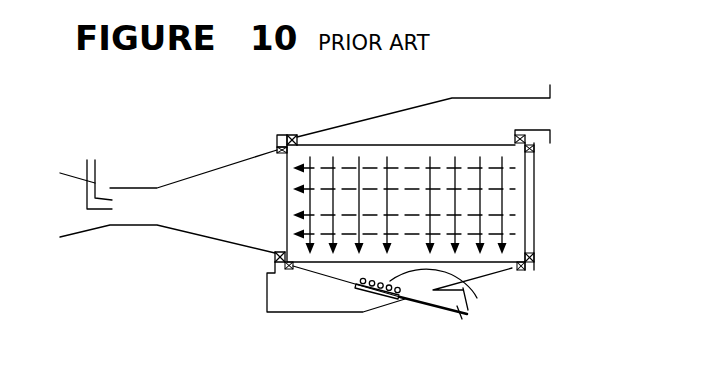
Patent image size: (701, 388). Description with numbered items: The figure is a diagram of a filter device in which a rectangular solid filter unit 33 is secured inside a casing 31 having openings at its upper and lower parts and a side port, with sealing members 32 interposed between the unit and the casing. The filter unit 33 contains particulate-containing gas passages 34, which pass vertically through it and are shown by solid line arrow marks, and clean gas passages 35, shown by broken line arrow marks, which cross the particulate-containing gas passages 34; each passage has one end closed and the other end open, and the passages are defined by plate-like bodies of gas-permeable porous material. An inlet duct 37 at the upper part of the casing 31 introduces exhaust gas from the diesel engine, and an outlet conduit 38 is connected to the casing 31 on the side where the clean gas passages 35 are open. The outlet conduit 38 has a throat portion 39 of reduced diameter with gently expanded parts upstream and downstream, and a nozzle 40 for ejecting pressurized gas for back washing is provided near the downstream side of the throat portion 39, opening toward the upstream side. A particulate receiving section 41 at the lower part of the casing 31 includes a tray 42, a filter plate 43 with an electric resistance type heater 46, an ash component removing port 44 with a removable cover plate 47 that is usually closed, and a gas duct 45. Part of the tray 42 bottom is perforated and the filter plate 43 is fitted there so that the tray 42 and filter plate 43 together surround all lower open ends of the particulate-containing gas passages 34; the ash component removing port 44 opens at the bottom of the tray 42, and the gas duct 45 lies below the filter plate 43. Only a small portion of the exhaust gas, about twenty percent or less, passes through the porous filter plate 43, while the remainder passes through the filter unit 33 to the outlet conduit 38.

The casing 31 is at (535, 223).
The sealing members 32 is at (535, 252).
The filter unit 33 is at (517, 187).
The particulate-containing gas passages 34 is at (503, 180).
The clean gas passages 35 is at (325, 235).
The inlet duct 37 is at (350, 123).
The outlet conduit 38 is at (187, 178).
The throat portion 39 is at (130, 187).
The nozzle 40 is at (110, 222).
The particulate receiving section 41 is at (515, 270).
The tray 42 is at (342, 280).
The filter plate 43 is at (380, 291).
The ash component removing port 44 is at (442, 305).
The gas duct 45 is at (312, 312).
The electric resistance type heater 46 is at (453, 292).
The removable cover plate 47 is at (465, 312).